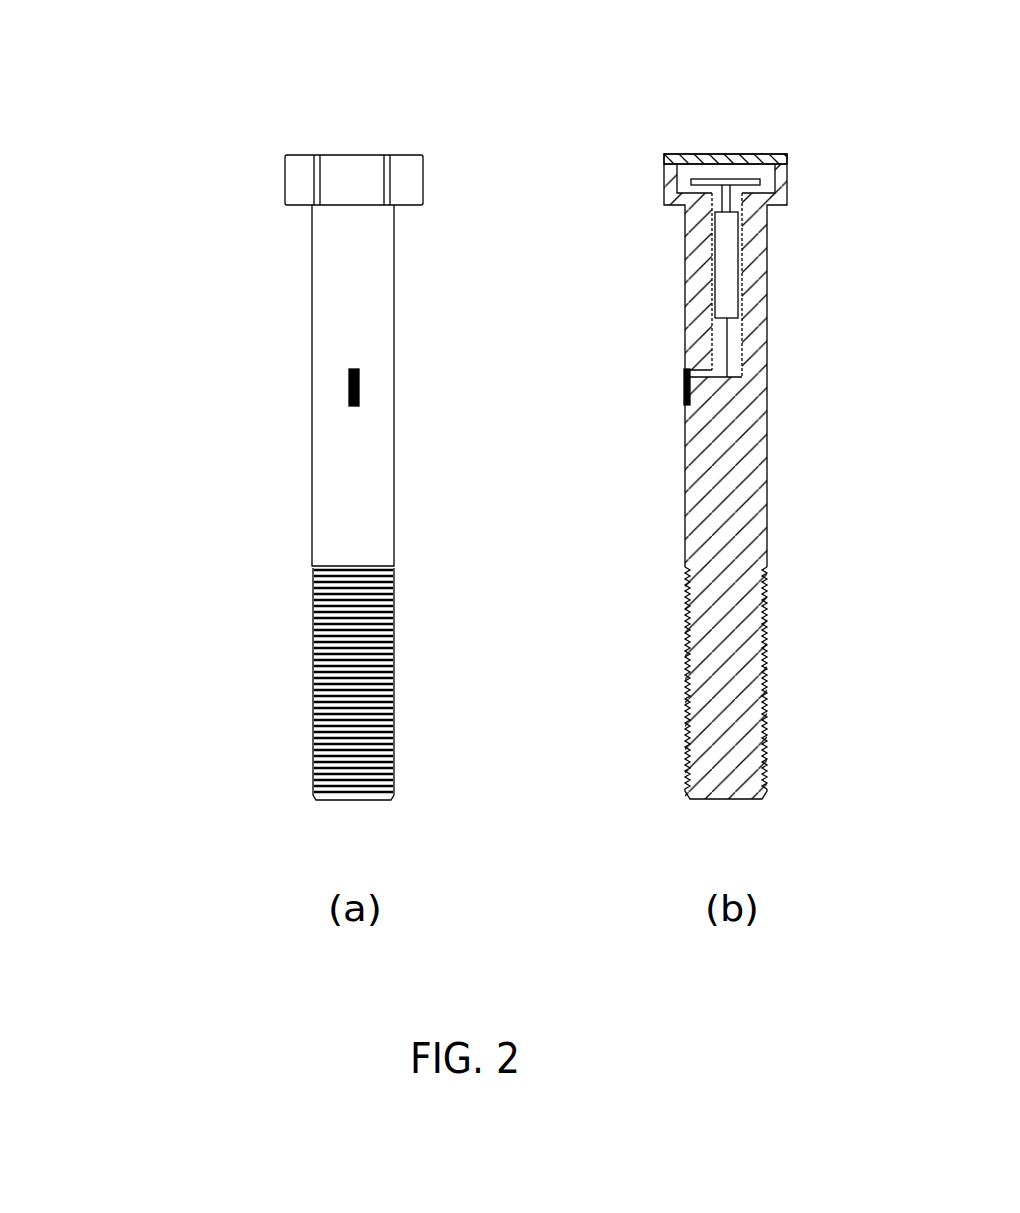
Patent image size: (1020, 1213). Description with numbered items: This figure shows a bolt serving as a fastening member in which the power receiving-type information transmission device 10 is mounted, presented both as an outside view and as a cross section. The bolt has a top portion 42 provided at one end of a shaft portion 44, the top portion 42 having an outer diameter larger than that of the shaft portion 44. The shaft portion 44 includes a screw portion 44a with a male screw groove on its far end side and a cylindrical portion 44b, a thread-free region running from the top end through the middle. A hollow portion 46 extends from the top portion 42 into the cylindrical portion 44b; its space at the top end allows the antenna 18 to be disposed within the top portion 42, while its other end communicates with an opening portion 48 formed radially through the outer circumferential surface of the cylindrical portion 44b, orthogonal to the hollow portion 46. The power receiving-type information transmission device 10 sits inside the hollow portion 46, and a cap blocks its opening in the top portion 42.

The top portion 42 is at (297, 182).
The shaft portion 44 is at (207, 502).
The cylindrical portion 44b is at (337, 470).
The screw portion 44a is at (317, 597).
The antenna 18 is at (727, 180).
The power receiving-type information transmission device 10 is at (730, 248).
The hollow portion 46 is at (733, 328).
The opening portion 48 is at (698, 368).